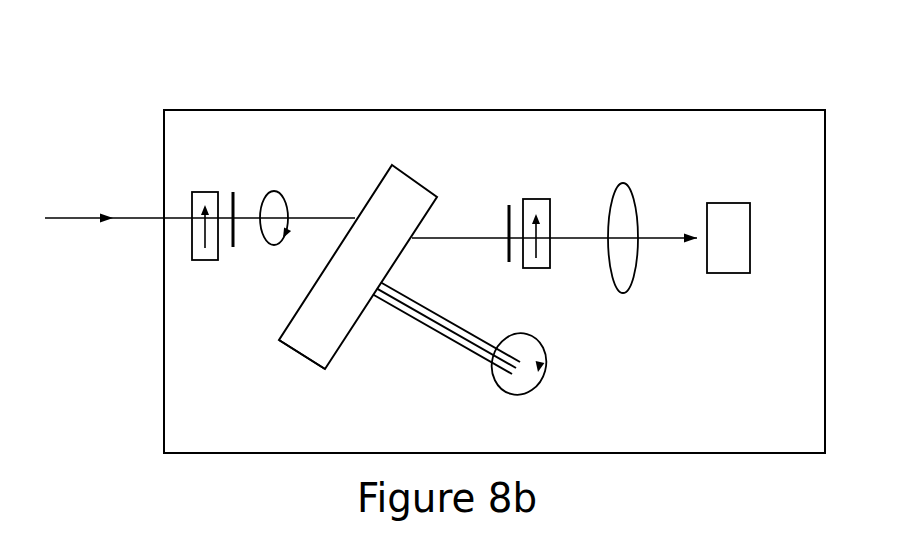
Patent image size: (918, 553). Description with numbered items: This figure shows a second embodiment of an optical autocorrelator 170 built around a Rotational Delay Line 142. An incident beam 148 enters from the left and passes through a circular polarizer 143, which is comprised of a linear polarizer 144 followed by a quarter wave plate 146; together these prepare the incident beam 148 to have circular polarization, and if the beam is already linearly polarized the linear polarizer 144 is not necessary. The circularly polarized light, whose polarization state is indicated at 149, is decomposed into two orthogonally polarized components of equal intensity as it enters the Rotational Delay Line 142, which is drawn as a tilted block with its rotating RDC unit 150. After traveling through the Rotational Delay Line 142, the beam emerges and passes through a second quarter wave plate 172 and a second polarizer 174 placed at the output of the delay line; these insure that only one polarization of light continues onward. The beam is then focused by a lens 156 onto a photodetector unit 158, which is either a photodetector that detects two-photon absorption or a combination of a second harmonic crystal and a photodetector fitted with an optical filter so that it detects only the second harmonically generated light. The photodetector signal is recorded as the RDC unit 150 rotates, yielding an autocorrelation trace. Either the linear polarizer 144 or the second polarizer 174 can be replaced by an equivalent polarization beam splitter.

The autocorrelator 170 is at (343, 90).
The Rotational Delay Line 142 is at (440, 158).
The circular polarizer 143 is at (200, 288).
The linear polarizer 144 is at (200, 182).
The quarter wave plate 146 is at (233, 185).
The incident beam 148 is at (113, 228).
The circular polarization state 149 is at (312, 218).
The RDC unit 150 is at (293, 348).
The second quarter wave plate 172 is at (508, 203).
The second polarizer 174 is at (541, 199).
The lens 156 is at (637, 182).
The photodetector unit 158 is at (715, 280).